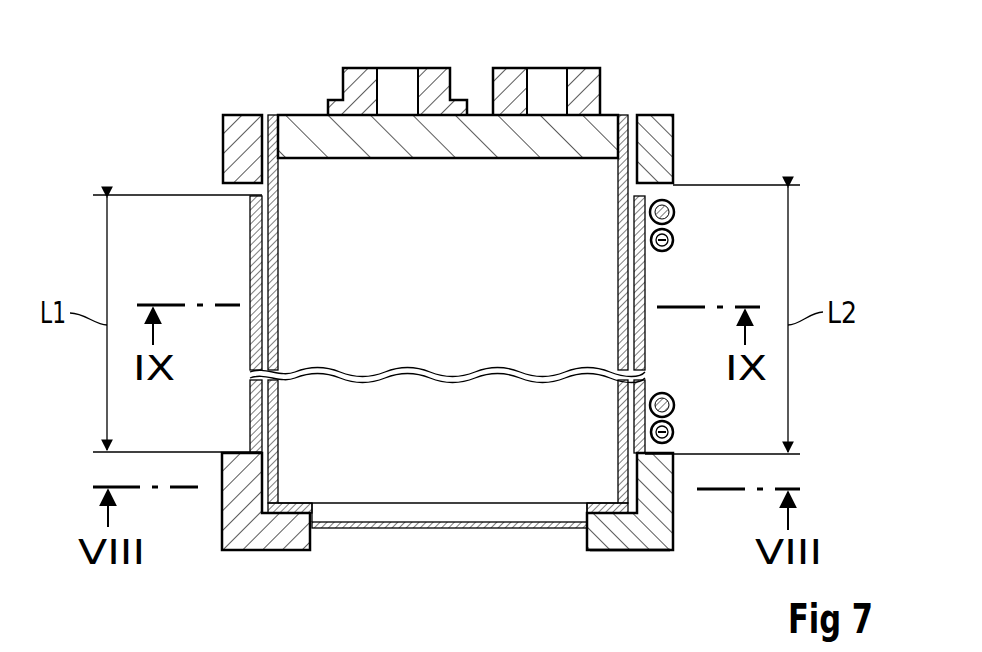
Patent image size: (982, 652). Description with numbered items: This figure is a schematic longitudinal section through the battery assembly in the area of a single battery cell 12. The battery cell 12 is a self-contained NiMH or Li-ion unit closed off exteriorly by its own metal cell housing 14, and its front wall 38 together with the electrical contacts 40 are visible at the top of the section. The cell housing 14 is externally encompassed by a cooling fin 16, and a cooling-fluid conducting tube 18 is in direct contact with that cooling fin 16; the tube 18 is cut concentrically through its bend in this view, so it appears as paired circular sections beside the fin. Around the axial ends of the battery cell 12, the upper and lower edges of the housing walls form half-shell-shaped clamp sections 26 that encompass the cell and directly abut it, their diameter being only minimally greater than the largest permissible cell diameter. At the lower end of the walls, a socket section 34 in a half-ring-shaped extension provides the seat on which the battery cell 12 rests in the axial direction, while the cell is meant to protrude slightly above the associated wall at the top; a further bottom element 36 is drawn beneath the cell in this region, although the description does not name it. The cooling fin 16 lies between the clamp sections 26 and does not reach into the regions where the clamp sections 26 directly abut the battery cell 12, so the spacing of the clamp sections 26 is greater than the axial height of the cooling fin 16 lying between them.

The battery cell 12 is at (467, 269).
The cell housing 14 is at (280, 268).
The cooling fin 16 is at (645, 290).
The tube 18 is at (675, 215).
The clamp section 26 is at (240, 140).
The socket section 34 is at (612, 550).
The bottom plate 36 is at (385, 528).
The front wall 38 is at (370, 158).
The electrical contact 40 is at (432, 68).